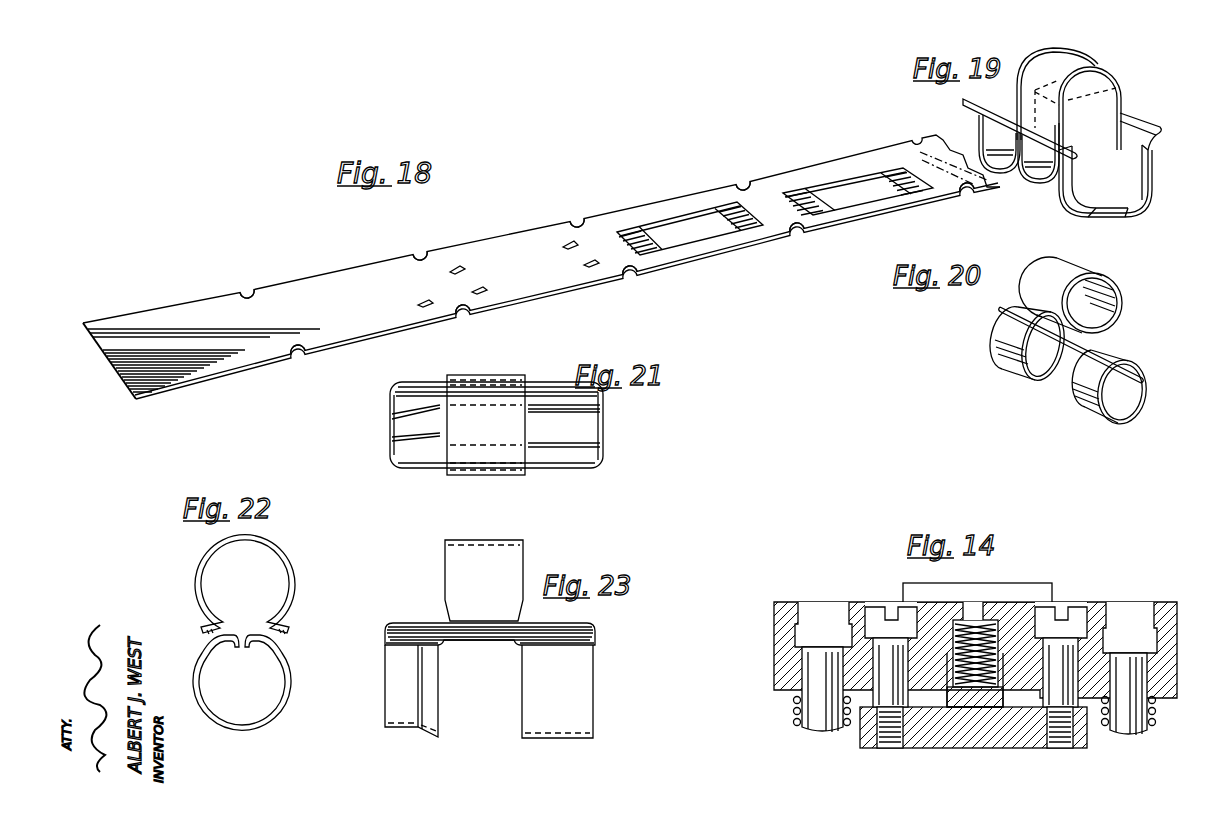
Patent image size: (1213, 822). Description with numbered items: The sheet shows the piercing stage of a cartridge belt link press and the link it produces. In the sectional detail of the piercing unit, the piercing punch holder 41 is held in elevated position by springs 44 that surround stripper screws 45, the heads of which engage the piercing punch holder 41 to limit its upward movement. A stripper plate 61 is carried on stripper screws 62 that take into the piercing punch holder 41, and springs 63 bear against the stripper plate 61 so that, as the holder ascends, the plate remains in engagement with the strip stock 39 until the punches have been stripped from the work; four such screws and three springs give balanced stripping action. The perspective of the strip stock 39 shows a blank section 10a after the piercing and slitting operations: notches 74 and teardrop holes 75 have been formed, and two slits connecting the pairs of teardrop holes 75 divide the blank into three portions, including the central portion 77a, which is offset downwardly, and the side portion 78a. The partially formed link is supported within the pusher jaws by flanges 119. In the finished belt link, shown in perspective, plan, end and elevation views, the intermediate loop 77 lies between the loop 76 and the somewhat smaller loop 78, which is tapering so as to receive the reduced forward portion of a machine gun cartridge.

In FIG. 18, the strip 10a is at (648, 214).
In FIG. 18, the strip stock 39 is at (237, 357).
In FIG. 18, the notches 74 is at (302, 354).
In FIG. 18, the teardrop holes 75 is at (443, 268).
In FIG. 18, the central portion 77a is at (673, 240).
In FIG. 18, the portion of blank 78a is at (693, 250).
In FIG. 19, the flanges 119 is at (968, 102).
In FIG. 19, the loop 76 is at (1043, 182).
In FIG. 20, the loop 76 is at (1008, 366).
In FIG. 21, the loop 76 is at (598, 433).
In FIG. 23, the loop 76 is at (575, 730).
In FIG. 19, the intermediate loop 77 is at (1073, 70).
In FIG. 20, the intermediate loop 77 is at (1100, 278).
In FIG. 21, the intermediate loop 77 is at (497, 462).
In FIG. 22, the intermediate loop 77 is at (292, 575).
In FIG. 23, the intermediate loop 77 is at (470, 550).
In FIG. 19, the loop 78 is at (1082, 206).
In FIG. 20, the loop 78 is at (1103, 418).
In FIG. 21, the loop 78 is at (395, 428).
In FIG. 22, the loop 78 is at (262, 720).
In FIG. 23, the loop 78 is at (392, 727).
In FIG. 14, the piercing punch holder 41 is at (1178, 617).
In FIG. 14, the springs 44 is at (794, 699).
In FIG. 14, the stripper screws 45 is at (808, 720).
In FIG. 14, the stripper plate 61 is at (1017, 747).
In FIG. 14, the stripper screws 62 is at (874, 617).
In FIG. 14, the springs 63 is at (977, 620).